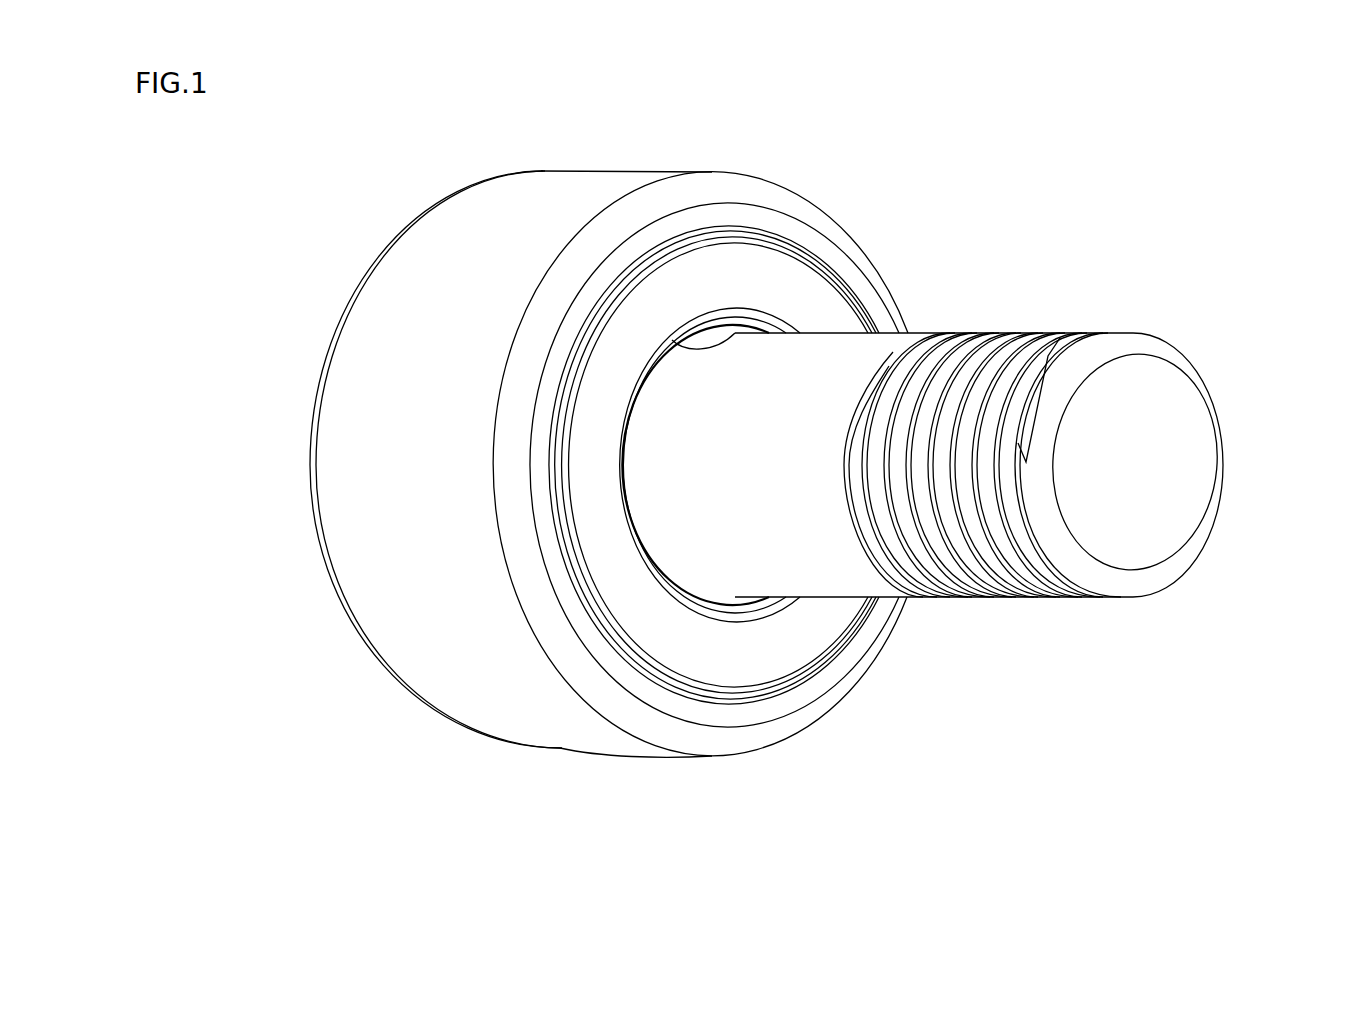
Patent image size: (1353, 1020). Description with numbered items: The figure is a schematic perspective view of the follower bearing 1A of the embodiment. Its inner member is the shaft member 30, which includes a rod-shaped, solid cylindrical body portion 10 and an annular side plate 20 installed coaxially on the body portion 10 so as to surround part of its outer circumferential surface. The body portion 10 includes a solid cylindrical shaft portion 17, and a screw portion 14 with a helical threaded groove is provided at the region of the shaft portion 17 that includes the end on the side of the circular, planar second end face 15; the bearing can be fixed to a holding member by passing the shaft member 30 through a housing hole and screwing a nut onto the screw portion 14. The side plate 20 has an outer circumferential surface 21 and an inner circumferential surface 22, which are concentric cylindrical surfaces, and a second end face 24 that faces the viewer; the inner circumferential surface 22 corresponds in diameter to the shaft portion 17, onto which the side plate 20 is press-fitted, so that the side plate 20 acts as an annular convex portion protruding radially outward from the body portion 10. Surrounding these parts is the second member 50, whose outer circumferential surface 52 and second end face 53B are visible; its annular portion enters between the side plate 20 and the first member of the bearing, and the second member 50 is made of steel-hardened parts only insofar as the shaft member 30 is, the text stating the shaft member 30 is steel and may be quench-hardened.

The follower bearing 1A is at (1121, 190).
The body portion 10 is at (815, 338).
The screw portion 14 is at (1010, 342).
The second end face 15 is at (1163, 457).
The shaft portion 17 is at (862, 333).
The side plate 20 is at (785, 277).
The outer circumferential surface 21 is at (668, 243).
The inner circumferential surface 22 is at (738, 338).
The second end face 24 is at (838, 303).
The shaft member 30 is at (875, 157).
The second member 50 is at (548, 188).
The outer circumferential surface 52 is at (617, 759).
The second end face 53B is at (803, 690).